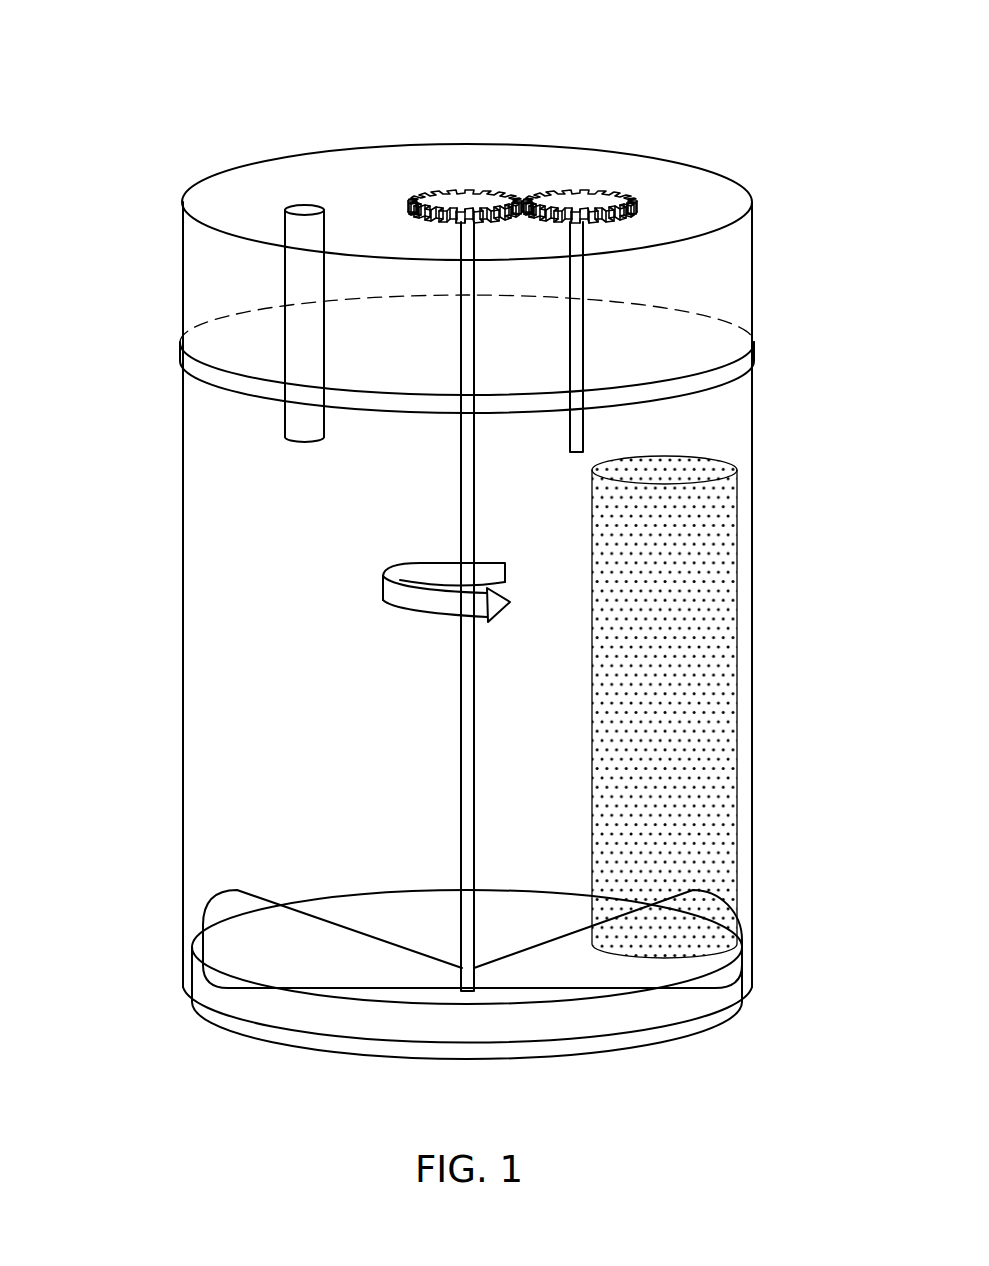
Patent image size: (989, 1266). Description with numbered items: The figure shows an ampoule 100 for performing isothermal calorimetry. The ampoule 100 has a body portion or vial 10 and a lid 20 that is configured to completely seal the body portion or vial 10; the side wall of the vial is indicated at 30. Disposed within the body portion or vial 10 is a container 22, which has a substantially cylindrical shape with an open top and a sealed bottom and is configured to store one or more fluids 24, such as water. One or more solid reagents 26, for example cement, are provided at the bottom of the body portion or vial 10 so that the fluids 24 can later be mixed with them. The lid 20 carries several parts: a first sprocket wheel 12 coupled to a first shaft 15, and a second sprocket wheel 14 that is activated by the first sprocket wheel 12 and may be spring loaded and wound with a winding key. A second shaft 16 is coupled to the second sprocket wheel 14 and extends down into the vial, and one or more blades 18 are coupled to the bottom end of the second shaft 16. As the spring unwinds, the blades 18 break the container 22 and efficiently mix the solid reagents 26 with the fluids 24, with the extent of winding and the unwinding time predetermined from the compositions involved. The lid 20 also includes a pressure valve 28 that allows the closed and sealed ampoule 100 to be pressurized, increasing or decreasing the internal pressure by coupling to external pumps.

The ampoule 100 is at (128, 45).
The body portion or vial 10 is at (757, 400).
The first sprocket wheel 12 is at (583, 188).
The second sprocket wheel 14 is at (463, 189).
The first shaft 15 is at (584, 278).
The second shaft 16 is at (462, 776).
The blades 18 is at (223, 903).
The lid 20 is at (757, 232).
The container 22 is at (738, 515).
The fluids 24 is at (712, 700).
The solid reagents 26 is at (683, 1007).
The pressure valve 28 is at (303, 210).
The container wall 30 is at (210, 512).